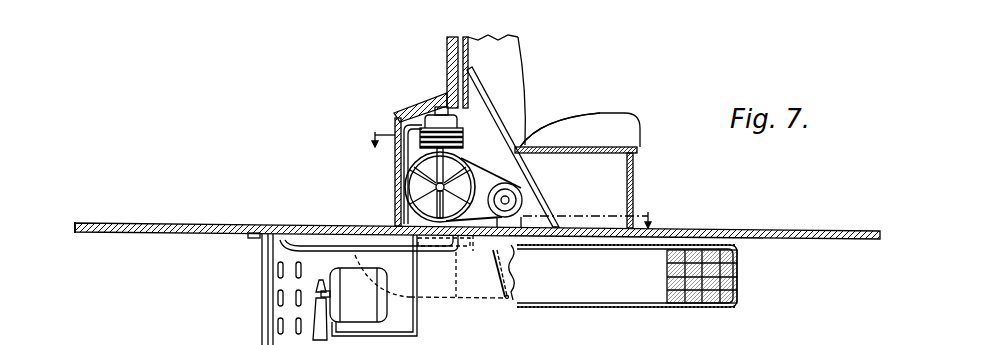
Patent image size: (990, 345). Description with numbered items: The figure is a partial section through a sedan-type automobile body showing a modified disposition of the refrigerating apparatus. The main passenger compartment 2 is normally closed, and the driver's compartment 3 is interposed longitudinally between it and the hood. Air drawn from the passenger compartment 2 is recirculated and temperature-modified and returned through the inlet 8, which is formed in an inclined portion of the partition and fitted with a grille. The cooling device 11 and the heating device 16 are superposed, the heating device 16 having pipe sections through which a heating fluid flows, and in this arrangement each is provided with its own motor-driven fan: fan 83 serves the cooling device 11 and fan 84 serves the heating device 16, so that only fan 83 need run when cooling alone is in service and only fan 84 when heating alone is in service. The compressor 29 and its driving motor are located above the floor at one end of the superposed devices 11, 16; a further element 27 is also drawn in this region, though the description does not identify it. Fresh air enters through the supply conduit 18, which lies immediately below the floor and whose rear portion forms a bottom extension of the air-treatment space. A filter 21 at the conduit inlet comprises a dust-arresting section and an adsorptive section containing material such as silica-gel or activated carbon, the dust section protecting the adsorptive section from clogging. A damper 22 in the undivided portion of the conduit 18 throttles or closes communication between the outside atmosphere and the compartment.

The main passenger compartment 2 is at (477, 187).
The driver's compartment 3 is at (596, 170).
The inlet 8 is at (492, 289).
The cooling device 11 is at (489, 166).
The heating device 16 is at (395, 210).
The supply conduit 18 is at (536, 276).
The filter 21 is at (740, 276).
The damper 22 is at (503, 286).
The pipe 27 is at (481, 290).
The compressor 29 is at (397, 173).
The fan 83 is at (518, 151).
The fan 84 is at (432, 274).